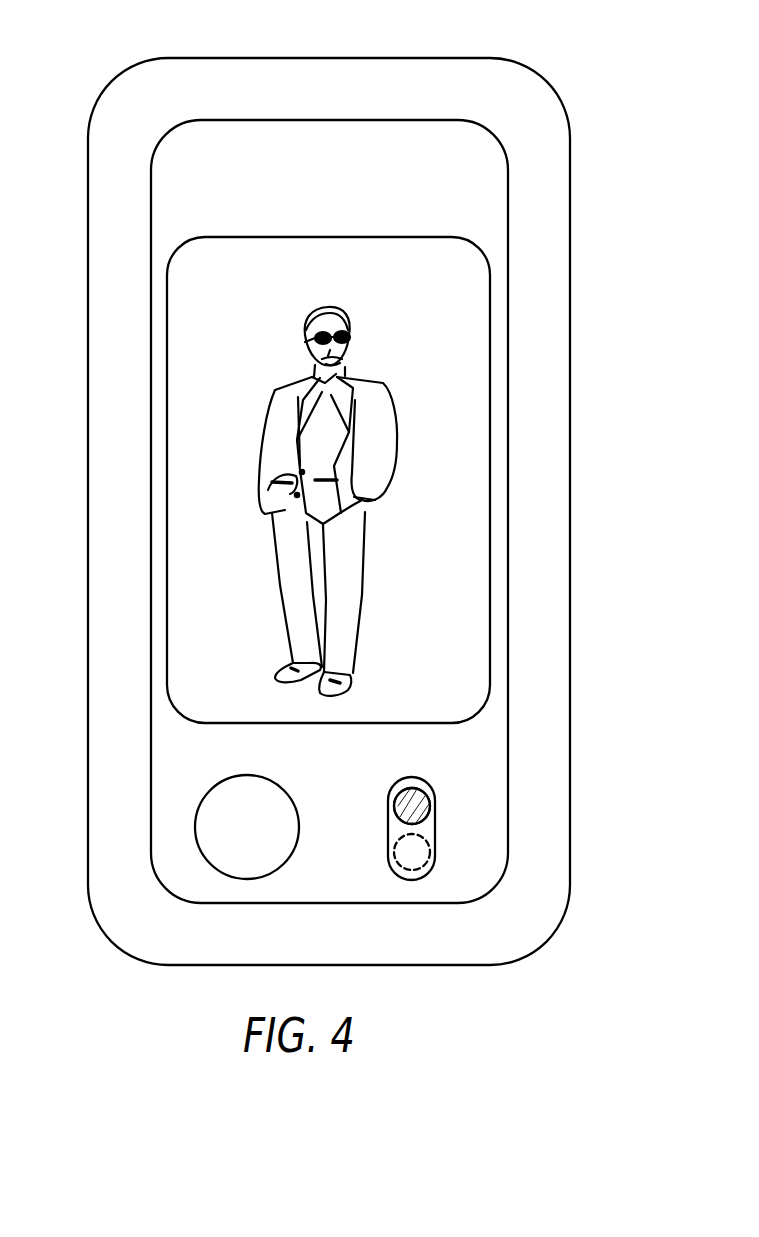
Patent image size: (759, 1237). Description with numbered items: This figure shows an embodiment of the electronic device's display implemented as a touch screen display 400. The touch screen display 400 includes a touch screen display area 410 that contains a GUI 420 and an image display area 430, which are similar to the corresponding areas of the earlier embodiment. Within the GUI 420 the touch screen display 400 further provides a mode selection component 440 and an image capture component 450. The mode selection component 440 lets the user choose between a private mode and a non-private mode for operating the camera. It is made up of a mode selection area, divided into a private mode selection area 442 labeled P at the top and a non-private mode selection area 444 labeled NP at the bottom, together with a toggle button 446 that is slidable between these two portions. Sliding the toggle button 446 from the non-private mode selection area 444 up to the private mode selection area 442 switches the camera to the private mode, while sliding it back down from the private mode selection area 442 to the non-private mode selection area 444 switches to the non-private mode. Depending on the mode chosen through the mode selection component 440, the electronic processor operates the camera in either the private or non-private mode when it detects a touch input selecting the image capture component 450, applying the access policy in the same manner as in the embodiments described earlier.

The touch screen display 400 is at (78, 29).
The touch screen display area 410 is at (537, 270).
The GUI 420 is at (480, 212).
The image display area 430 is at (463, 346).
The mode selection component 440 is at (406, 777).
The private mode selection area 442 is at (399, 795).
The non-private mode selection area 444 is at (399, 840).
The toggle button 446 is at (425, 819).
The image capture component 450 is at (247, 775).